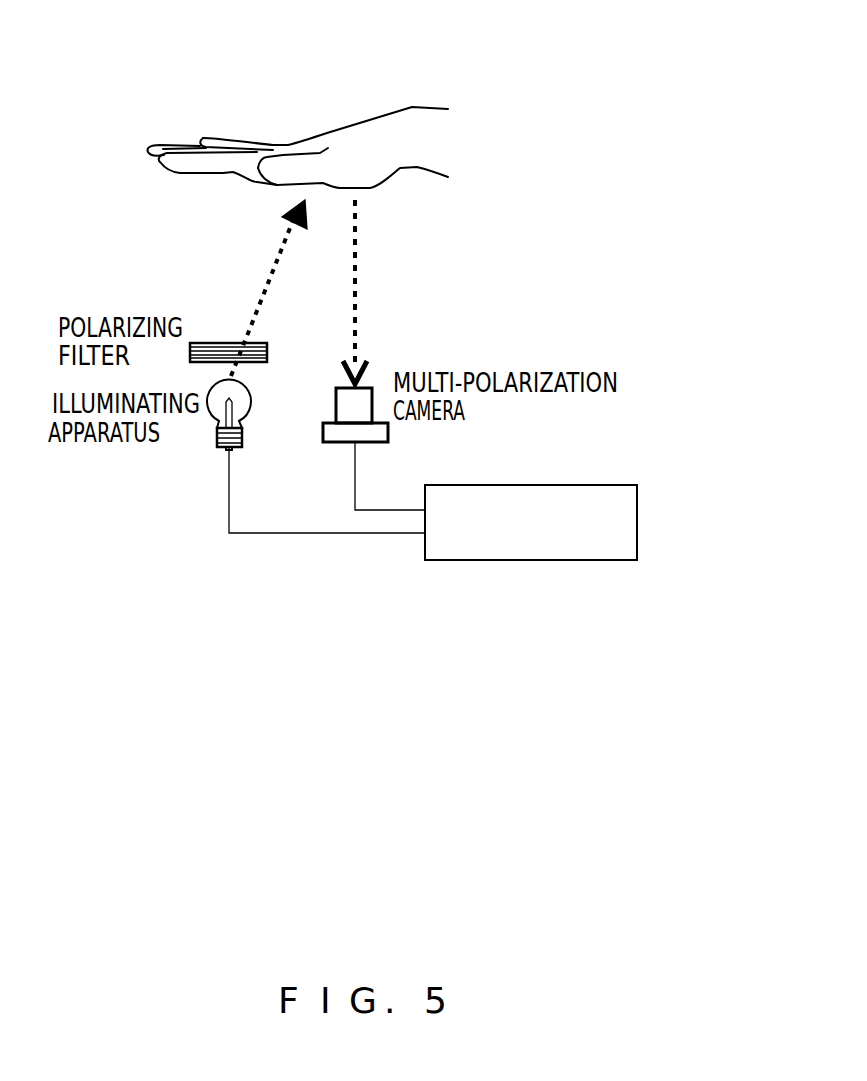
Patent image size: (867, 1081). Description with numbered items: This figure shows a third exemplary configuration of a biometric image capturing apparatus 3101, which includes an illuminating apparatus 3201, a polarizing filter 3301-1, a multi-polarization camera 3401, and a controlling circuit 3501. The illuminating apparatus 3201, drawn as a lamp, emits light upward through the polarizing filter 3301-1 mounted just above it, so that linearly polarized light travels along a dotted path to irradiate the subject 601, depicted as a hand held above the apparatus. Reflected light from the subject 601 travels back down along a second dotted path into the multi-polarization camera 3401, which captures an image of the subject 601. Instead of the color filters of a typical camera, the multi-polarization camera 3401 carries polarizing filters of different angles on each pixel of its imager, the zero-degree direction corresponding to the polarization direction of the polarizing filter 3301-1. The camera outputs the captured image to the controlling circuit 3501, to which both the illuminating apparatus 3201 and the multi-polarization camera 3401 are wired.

The subject 601 is at (427, 122).
The biometric image capturing apparatus 3101 is at (604, 343).
The illuminating apparatus 3201 is at (217, 437).
The polarizing filter 3301-1 is at (217, 342).
The multi-polarization camera 3401 is at (365, 443).
The controlling circuit 3501 is at (637, 510).